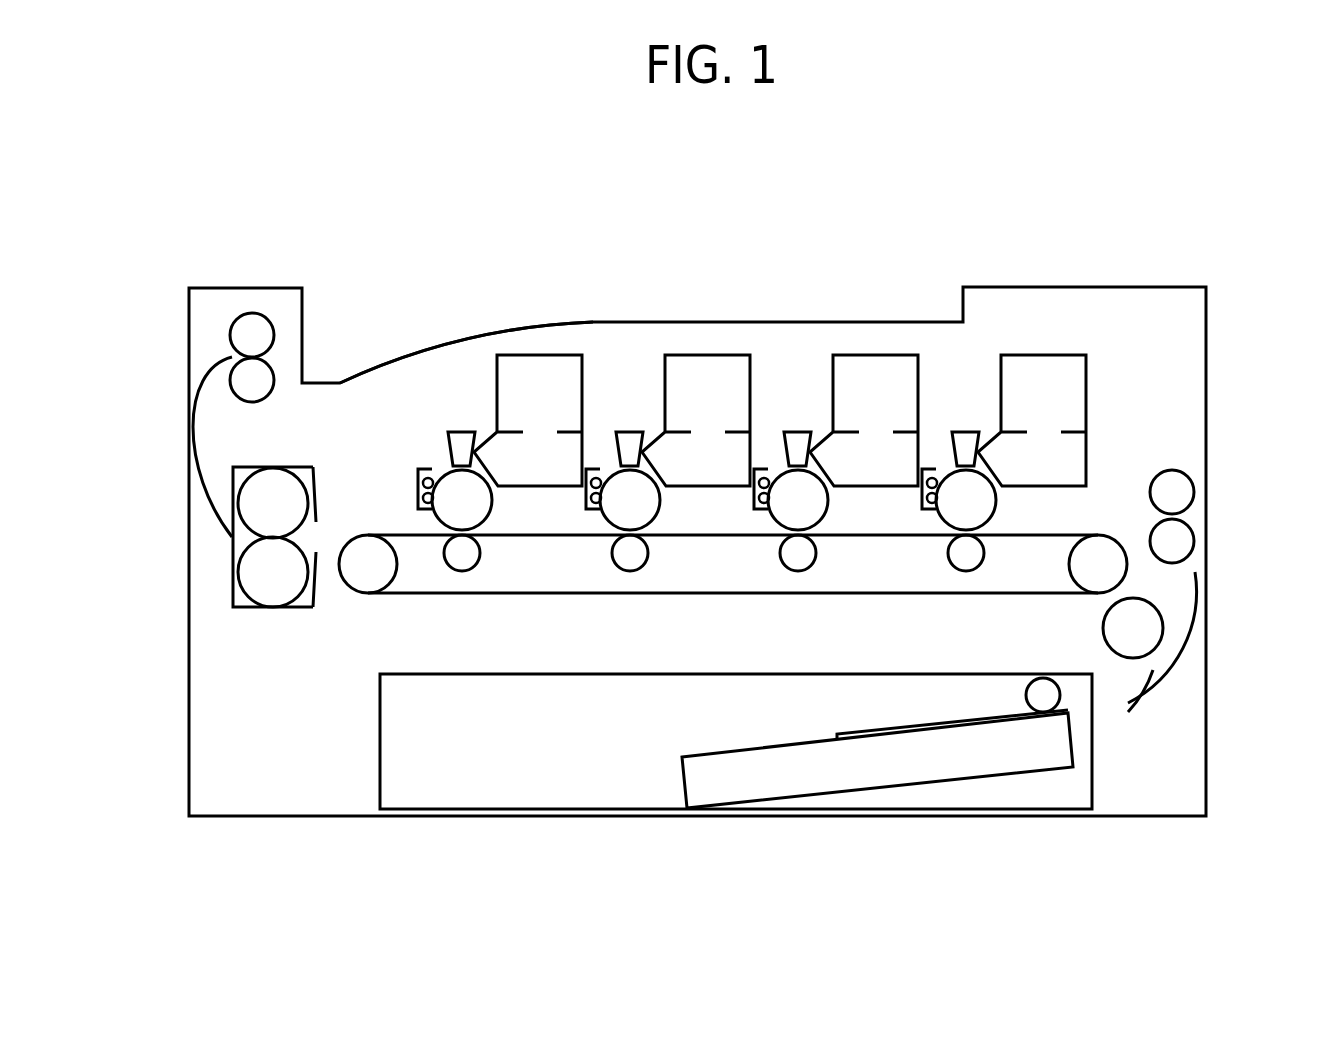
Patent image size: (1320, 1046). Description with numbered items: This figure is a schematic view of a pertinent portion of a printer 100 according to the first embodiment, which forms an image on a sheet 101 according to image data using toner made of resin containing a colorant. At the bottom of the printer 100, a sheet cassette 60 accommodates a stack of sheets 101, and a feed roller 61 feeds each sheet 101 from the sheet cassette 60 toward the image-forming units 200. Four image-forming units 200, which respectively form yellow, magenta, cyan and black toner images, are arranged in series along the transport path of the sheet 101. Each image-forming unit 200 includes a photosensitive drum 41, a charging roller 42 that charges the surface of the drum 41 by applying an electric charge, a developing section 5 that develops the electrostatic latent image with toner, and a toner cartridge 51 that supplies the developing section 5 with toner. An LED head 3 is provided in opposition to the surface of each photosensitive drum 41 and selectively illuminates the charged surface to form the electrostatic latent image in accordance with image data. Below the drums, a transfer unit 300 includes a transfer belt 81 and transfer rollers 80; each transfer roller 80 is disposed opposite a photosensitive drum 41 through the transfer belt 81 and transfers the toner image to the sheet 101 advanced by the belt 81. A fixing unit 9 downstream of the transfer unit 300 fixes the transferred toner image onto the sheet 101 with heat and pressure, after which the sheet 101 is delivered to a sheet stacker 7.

The printer 100 is at (1158, 287).
The sheet stacker 7 is at (410, 352).
The fixing unit 9 is at (233, 588).
The LED head 3 is at (457, 431).
The photosensitive drum 41 is at (1000, 500).
The charging roller 42 is at (924, 468).
The image-forming unit 200 is at (531, 354).
The developing section 5 is at (1086, 418).
The toner cartridge 51 is at (1067, 353).
The transfer belt 81 is at (552, 594).
The transfer unit 300 is at (742, 598).
The transfer roller 80 is at (968, 570).
The sheet 101 is at (1145, 695).
The sheet cassette 60 is at (380, 787).
The feed roller 61 is at (1060, 693).